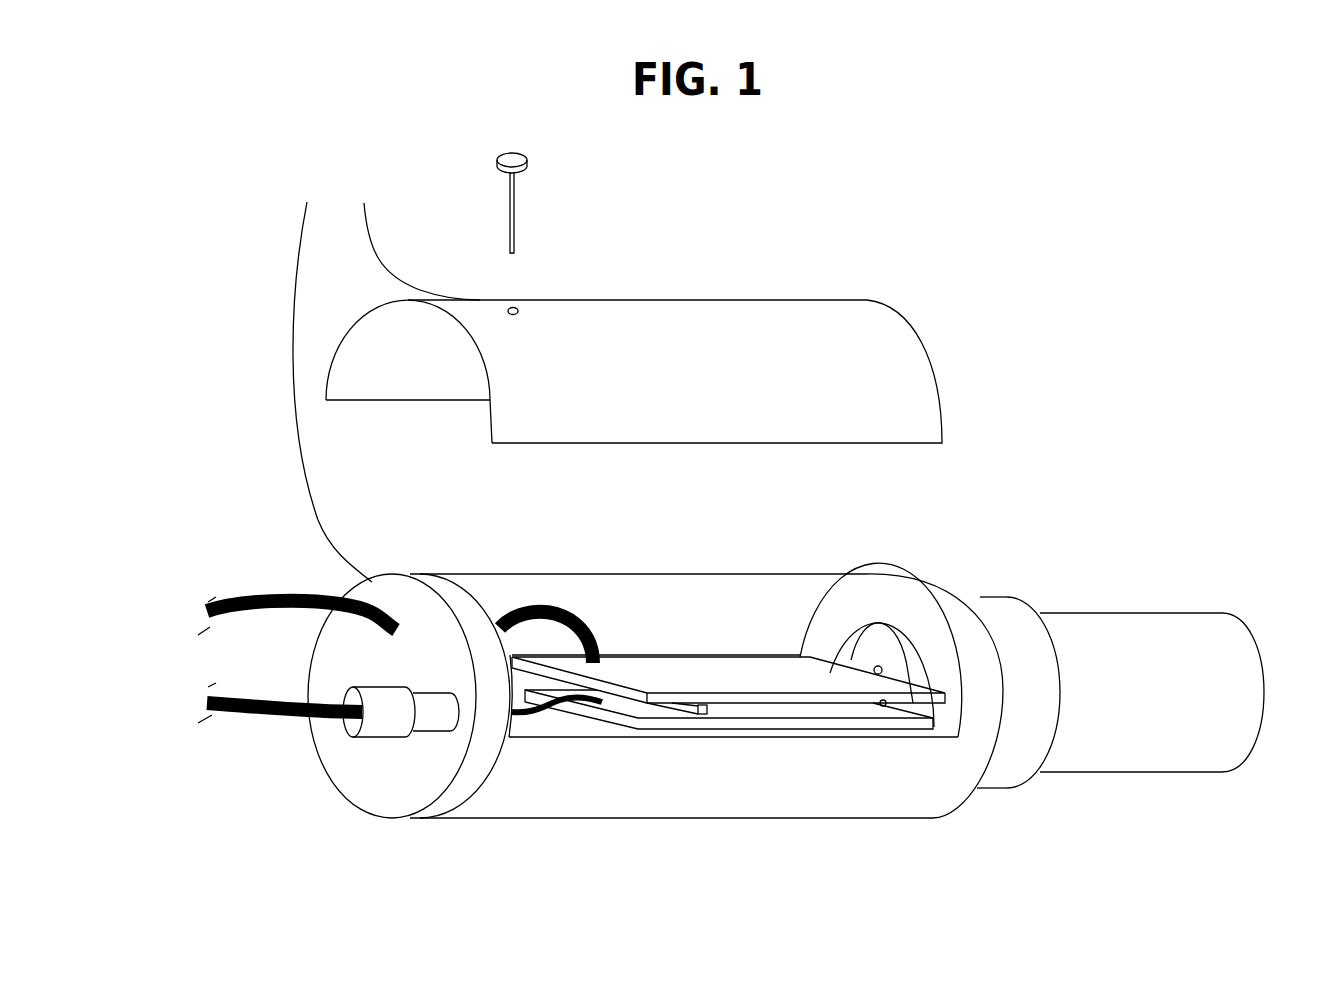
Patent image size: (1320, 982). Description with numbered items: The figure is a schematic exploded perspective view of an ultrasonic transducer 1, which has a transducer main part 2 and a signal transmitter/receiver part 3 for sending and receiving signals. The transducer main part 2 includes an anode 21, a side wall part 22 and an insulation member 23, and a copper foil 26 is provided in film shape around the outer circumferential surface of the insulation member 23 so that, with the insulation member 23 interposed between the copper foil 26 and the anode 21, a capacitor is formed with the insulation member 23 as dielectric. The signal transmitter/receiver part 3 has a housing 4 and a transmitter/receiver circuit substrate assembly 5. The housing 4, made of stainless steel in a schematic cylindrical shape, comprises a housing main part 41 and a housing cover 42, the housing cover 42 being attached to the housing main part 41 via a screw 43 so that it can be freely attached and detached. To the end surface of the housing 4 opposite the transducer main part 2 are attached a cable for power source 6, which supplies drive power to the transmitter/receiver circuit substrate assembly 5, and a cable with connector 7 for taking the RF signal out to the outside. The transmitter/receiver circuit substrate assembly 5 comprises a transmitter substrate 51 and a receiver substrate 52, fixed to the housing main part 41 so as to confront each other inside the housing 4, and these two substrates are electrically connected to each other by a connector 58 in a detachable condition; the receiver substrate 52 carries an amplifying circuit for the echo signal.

The ultrasonic transducer 1 is at (204, 209).
The transducer main part 2 is at (1095, 774).
The signal transmitter/receiver part 3 is at (808, 819).
The housing 4 is at (380, 170).
The housing main part 41 is at (332, 377).
The housing cover 42 is at (414, 236).
The screw 43 is at (517, 207).
The transmitter/receiver circuit substrate assembly 5 is at (797, 532).
The transmitter substrate 51 is at (735, 663).
The receiver substrate 52 is at (775, 713).
The connector 58 is at (702, 705).
The cable for power source 6 is at (278, 597).
The cable with connector 7 is at (243, 720).
The anode 21 is at (884, 670).
The side wall part 22 is at (867, 622).
The insulation member 23 is at (875, 648).
The copper foil 26 is at (897, 643).